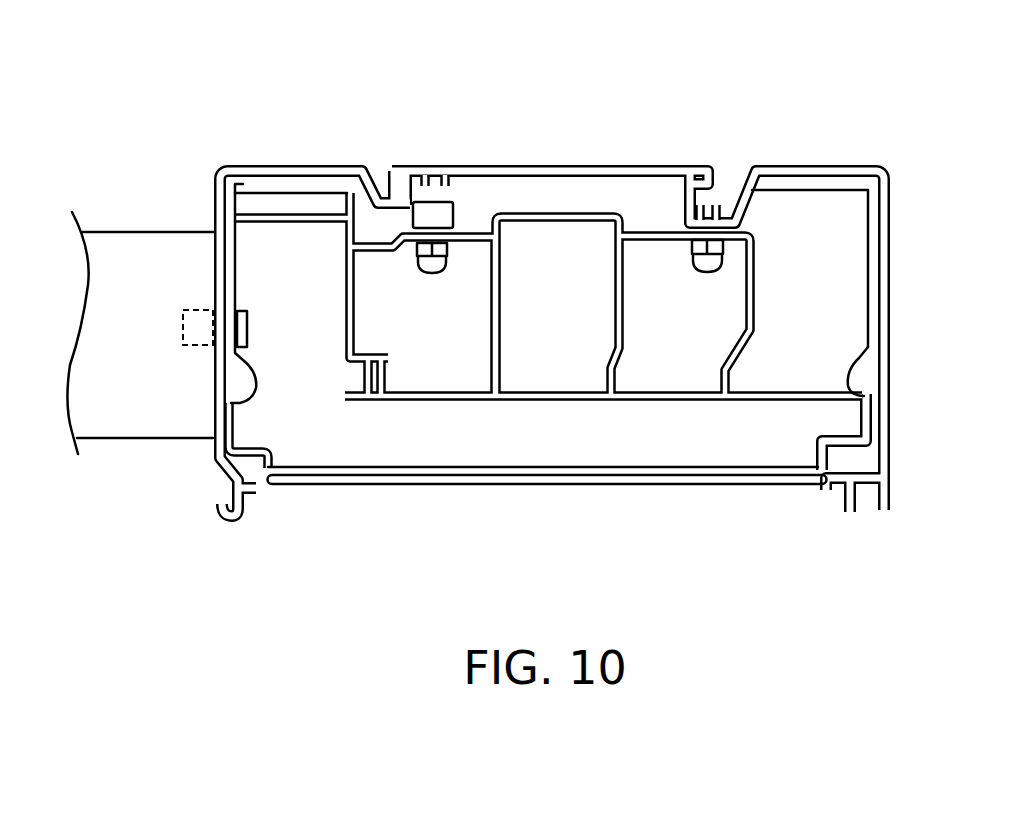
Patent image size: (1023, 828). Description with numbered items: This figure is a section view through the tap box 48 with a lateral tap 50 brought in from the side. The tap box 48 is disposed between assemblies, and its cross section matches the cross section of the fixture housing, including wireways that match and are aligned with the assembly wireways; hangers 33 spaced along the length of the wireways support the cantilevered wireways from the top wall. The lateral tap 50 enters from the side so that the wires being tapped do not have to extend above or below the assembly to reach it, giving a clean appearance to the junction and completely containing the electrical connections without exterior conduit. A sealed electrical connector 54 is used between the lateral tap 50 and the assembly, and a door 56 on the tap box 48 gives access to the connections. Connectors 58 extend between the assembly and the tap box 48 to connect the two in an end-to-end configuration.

The tap box 48 is at (866, 140).
The hangers 33 is at (445, 218).
The lateral tap 50 is at (130, 410).
The sealed electrical connector 54 is at (243, 268).
The door 56 is at (552, 485).
The connectors 58 is at (247, 330).